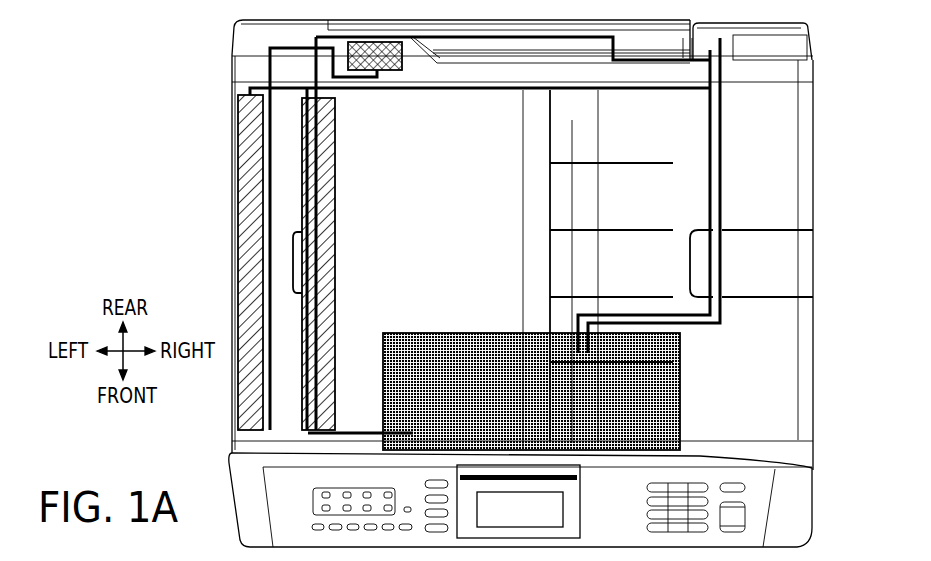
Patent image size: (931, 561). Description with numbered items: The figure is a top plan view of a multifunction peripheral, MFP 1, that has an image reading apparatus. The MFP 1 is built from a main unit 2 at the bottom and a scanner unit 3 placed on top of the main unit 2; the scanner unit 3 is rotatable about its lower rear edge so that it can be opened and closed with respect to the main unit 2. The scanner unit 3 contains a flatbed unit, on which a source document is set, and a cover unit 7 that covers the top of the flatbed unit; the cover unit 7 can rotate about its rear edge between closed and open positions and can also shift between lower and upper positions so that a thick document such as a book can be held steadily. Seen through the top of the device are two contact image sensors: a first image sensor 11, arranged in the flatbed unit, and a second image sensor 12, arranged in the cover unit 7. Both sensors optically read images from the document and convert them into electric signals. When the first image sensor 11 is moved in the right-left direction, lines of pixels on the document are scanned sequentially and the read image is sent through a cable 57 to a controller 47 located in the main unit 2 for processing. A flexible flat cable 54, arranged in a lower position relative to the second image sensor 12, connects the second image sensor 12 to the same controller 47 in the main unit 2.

The MFP 1 is at (203, 93).
The main unit 2 is at (798, 513).
The scanner unit 3 is at (812, 117).
The cover unit 7 is at (805, 193).
The first image sensor 11 is at (237, 167).
The second image sensor 12 is at (330, 165).
The controller 47 is at (445, 333).
The flexible flat cable 54 is at (722, 138).
The cable 57 is at (710, 134).